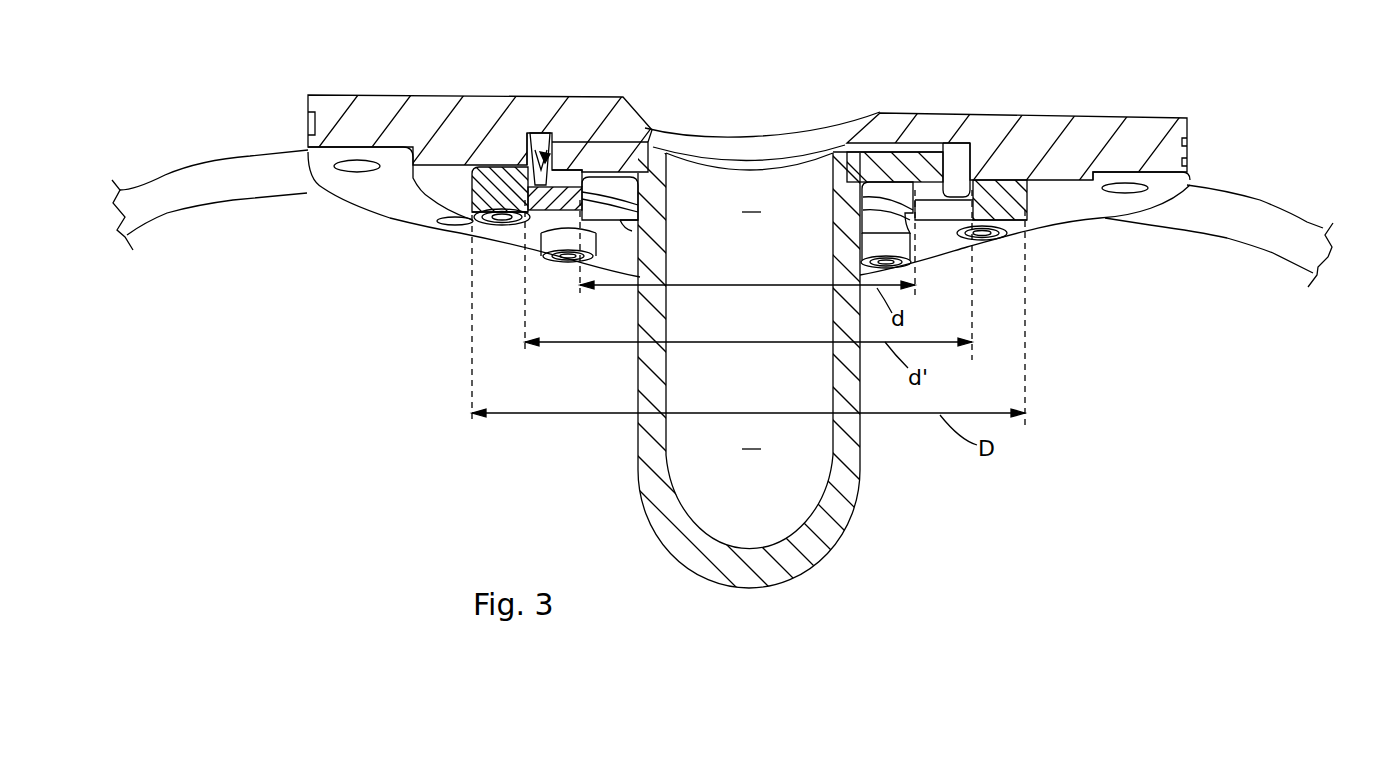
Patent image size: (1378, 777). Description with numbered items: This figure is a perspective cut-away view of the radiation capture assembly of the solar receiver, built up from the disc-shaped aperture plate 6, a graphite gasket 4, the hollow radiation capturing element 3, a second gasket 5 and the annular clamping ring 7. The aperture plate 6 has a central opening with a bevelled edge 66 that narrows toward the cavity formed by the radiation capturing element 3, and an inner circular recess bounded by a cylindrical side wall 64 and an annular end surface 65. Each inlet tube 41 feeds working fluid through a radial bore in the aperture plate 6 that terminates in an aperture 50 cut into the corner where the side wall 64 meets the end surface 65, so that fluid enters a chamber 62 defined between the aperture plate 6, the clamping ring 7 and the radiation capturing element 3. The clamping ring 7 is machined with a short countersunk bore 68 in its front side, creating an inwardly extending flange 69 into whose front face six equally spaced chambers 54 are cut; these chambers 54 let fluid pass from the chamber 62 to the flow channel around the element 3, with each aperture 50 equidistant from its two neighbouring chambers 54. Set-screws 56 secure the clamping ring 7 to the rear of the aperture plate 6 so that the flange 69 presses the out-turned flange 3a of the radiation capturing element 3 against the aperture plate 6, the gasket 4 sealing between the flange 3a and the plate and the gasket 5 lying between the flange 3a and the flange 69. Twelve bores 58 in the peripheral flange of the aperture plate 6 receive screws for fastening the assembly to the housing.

The radiation capturing element 3 is at (853, 477).
The out-turned flange 3a is at (907, 165).
The gasket 4 is at (638, 143).
The gasket 5 is at (890, 203).
The aperture plate 6 is at (1133, 147).
The clamping ring 7 is at (1010, 207).
The inlet tube 41 is at (242, 190).
The aperture 50 is at (543, 157).
The chambers 54 is at (632, 233).
The set-screws 56 is at (997, 247).
The bores 58 is at (1125, 192).
The chamber 62 is at (499, 129).
The cylindrical side wall 64 is at (537, 193).
The annular end surface 65 is at (540, 140).
The bevelled edge 66 is at (793, 140).
The countersunk bore 68 is at (963, 188).
The inwardly extending flange 69 is at (527, 187).